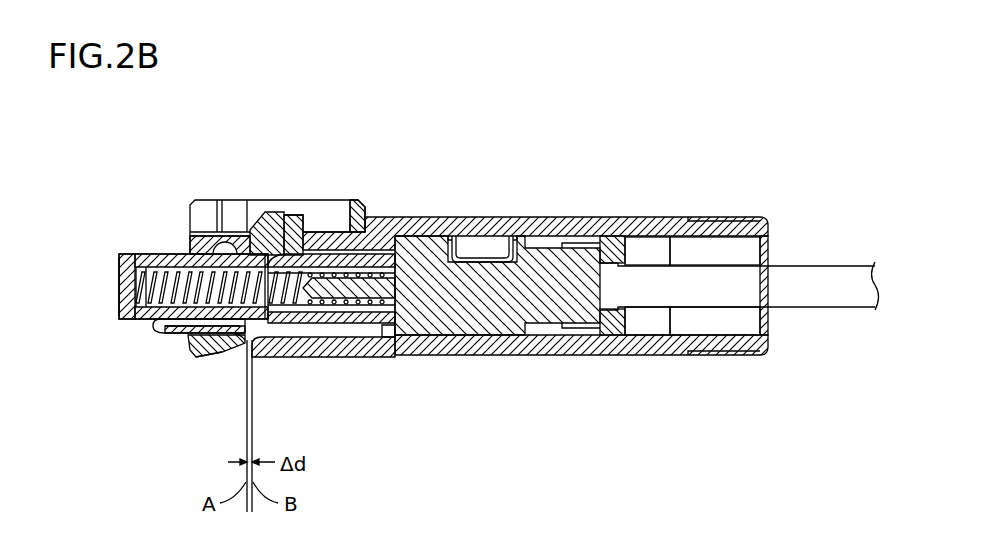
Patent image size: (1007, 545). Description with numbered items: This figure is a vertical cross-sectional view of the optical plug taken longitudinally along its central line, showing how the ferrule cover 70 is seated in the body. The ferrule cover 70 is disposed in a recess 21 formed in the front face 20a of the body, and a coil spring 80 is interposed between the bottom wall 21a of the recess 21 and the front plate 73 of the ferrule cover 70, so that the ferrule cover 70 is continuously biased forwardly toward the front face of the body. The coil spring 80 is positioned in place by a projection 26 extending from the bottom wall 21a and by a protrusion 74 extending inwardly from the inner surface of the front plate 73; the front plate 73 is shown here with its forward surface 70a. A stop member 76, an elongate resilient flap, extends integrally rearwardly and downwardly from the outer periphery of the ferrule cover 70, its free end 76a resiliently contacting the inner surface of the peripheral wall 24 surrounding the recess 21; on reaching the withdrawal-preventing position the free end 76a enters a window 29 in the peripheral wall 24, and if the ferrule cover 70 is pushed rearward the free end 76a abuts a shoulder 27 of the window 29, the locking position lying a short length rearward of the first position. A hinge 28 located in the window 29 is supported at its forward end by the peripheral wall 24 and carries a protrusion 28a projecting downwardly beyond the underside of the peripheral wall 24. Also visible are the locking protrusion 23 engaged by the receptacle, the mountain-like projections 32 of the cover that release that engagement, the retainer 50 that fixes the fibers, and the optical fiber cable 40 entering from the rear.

The front face 20a is at (192, 236).
The recess 21 is at (220, 243).
The bottom wall 21a is at (377, 255).
The locking protrusion 23 is at (291, 238).
The peripheral wall 24 is at (345, 356).
The projection 26 is at (371, 300).
The shoulder 27 is at (258, 336).
The hinge 28 is at (229, 354).
The protrusion 28a is at (207, 352).
The window 29 is at (246, 346).
The mountain-like projections 32 is at (265, 228).
The optical fiber cable 40 is at (828, 266).
The retainer 50 is at (490, 236).
The ferrule cover 70 is at (160, 245).
The cap end face 70a is at (118, 258).
The front plate 73 is at (122, 290).
The protrusion 74 is at (141, 262).
The stop member 76 is at (180, 334).
The free end 76a is at (265, 331).
The coil spring 80 is at (313, 278).